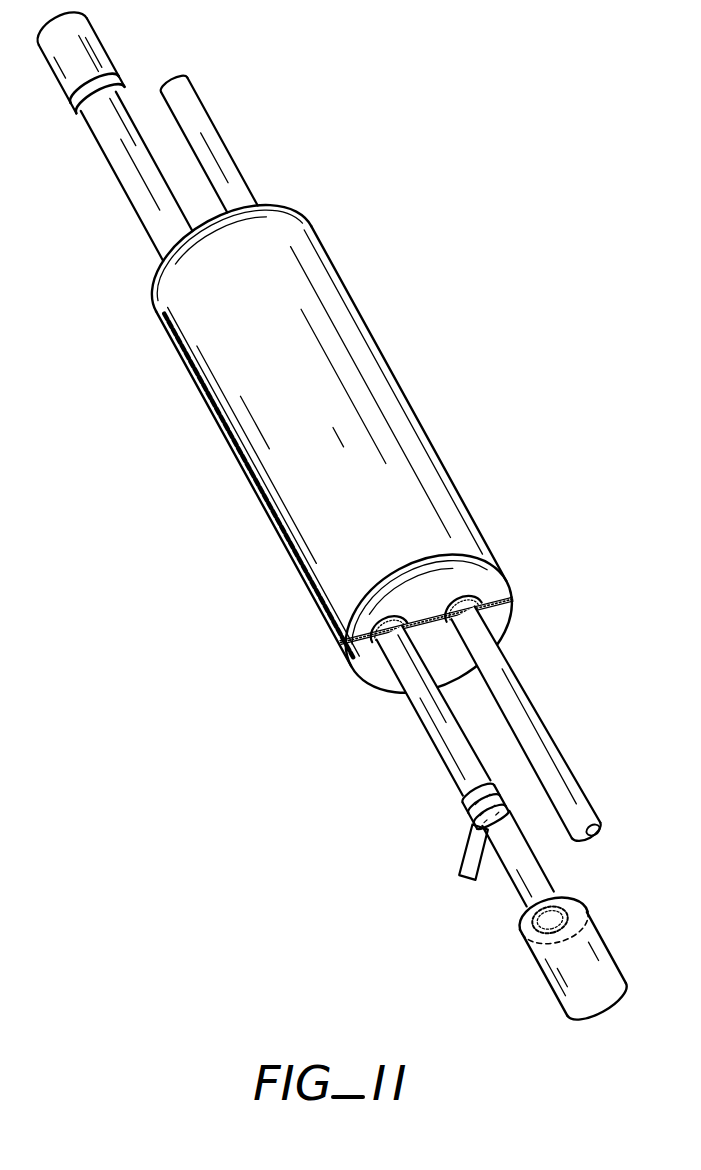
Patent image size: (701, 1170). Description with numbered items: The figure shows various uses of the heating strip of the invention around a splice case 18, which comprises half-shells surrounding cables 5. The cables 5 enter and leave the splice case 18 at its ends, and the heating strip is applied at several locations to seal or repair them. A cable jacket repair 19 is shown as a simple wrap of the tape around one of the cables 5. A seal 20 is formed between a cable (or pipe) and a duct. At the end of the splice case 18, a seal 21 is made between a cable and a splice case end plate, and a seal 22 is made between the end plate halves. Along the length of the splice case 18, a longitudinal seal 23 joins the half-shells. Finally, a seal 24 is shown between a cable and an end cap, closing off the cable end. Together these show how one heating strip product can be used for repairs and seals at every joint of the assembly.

The cables 5 is at (215, 168).
The splice case 18 is at (420, 404).
The cable jacket repair 19 is at (462, 827).
The seal between a cable and a duct 20 is at (520, 926).
The seal between a cable and a splice case end plate 21 is at (472, 601).
The seal between end plate halves 22 is at (348, 655).
The longitudinal seal between the half-shells 23 is at (240, 468).
The seal between a cable and an end cap 24 is at (87, 68).